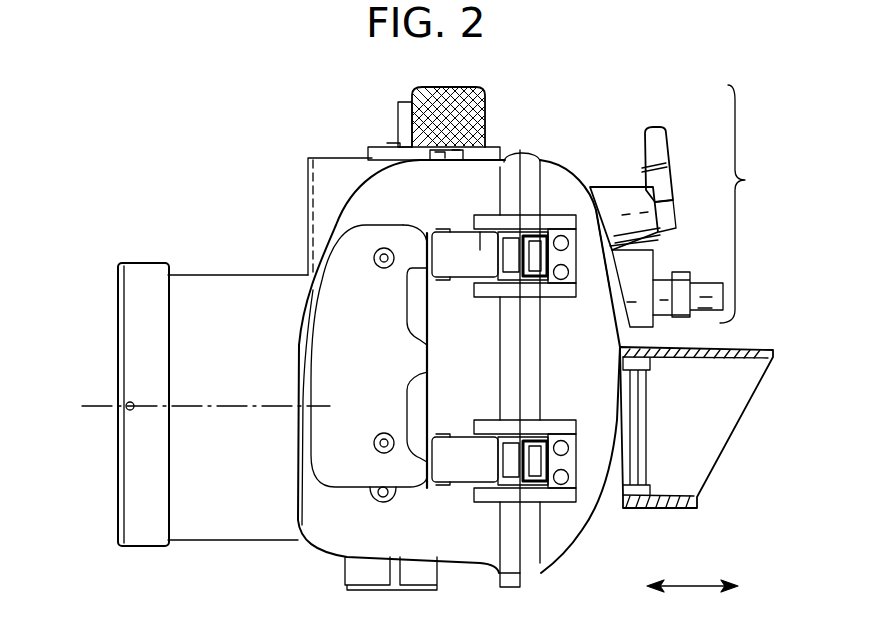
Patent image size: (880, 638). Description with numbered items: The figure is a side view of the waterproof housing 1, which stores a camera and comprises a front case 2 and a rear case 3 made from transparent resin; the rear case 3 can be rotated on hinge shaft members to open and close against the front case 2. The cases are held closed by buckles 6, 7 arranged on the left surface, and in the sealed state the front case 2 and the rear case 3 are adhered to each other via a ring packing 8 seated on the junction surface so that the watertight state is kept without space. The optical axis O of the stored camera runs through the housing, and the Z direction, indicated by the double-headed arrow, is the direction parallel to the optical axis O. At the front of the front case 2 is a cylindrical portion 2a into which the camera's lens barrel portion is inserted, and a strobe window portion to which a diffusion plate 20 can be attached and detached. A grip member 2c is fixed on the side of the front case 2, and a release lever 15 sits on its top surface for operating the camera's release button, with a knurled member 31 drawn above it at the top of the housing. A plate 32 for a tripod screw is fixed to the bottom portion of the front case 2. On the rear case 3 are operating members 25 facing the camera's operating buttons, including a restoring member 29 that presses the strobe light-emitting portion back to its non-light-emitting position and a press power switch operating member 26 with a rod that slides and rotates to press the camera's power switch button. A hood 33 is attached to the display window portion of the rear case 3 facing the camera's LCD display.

The waterproof housing 1 is at (168, 138).
The front case 2 is at (357, 192).
The cylindrical portion 2a is at (192, 274).
The grip member 2c is at (343, 333).
The rear case 3 is at (587, 177).
The buckle 6 is at (480, 247).
The buckle 7 is at (465, 470).
The ring packing 8 is at (136, 262).
The release lever 15 is at (400, 112).
The diffusion plate 20 is at (300, 207).
The operating members 25 is at (685, 204).
The press power switch operating member 26 is at (692, 300).
The restoring member 29 is at (665, 150).
The knob 31 is at (450, 88).
The plate for tripod screw 32 is at (360, 592).
The hood 33 is at (740, 348).
The optical axis O is at (98, 405).
The Z direction Z is at (692, 576).